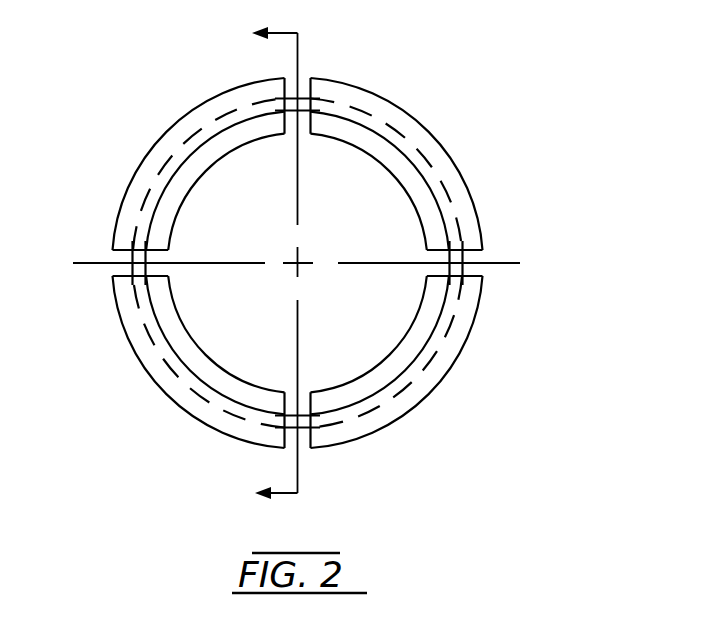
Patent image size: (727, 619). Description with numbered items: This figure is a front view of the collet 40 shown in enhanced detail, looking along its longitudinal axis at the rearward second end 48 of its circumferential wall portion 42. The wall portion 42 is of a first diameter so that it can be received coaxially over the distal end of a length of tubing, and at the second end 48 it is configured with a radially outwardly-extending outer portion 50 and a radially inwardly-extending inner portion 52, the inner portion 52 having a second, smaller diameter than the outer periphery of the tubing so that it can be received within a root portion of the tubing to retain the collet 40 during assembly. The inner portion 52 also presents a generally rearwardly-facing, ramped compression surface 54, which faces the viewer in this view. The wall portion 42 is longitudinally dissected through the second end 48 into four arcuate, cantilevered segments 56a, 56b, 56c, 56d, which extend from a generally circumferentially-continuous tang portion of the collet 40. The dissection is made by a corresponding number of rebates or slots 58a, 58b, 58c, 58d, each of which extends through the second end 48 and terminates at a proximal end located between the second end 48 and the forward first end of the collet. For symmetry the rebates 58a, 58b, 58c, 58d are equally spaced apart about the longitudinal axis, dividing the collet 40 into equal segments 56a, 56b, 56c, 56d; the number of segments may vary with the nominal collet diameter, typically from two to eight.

The collet 40 is at (483, 118).
The circumferential wall portion 42 is at (449, 336).
The second end 48 is at (470, 212).
The outer portion 50 is at (483, 238).
The inner portion 52 is at (405, 196).
The compression surface 54 is at (418, 342).
The arcuate cantilevered segment 56a is at (412, 111).
The arcuate cantilevered segment 56b is at (412, 417).
The arcuate cantilevered segment 56c is at (177, 415).
The arcuate cantilevered segment 56d is at (195, 108).
The rebate 58a is at (483, 277).
The rebate 58b is at (309, 447).
The rebate 58c is at (113, 273).
The rebate 58d is at (306, 86).